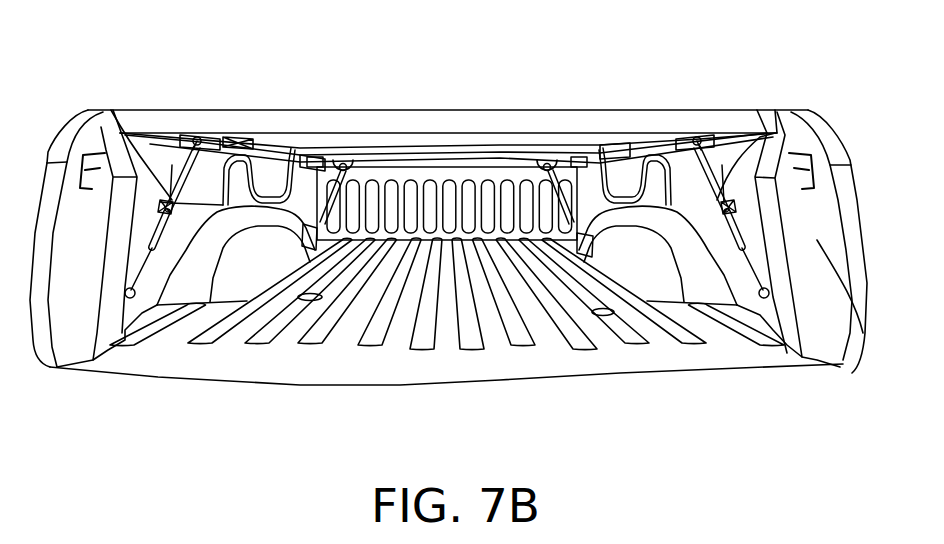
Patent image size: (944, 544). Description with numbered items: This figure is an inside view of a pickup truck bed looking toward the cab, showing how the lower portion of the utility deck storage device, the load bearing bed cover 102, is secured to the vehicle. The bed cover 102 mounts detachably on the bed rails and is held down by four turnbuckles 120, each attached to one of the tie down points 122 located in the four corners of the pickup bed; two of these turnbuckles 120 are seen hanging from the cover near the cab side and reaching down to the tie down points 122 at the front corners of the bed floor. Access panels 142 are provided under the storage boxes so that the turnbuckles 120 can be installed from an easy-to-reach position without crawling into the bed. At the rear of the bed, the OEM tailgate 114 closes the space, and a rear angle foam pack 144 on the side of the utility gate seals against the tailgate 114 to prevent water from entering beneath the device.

The load bearing bed cover 102 is at (435, 146).
The tailgate 114 is at (313, 337).
The turnbuckle 120 is at (113, 110).
The tie down point 122 is at (181, 135).
The access panel 142 is at (256, 141).
The rear angle foam pack 144 is at (852, 373).